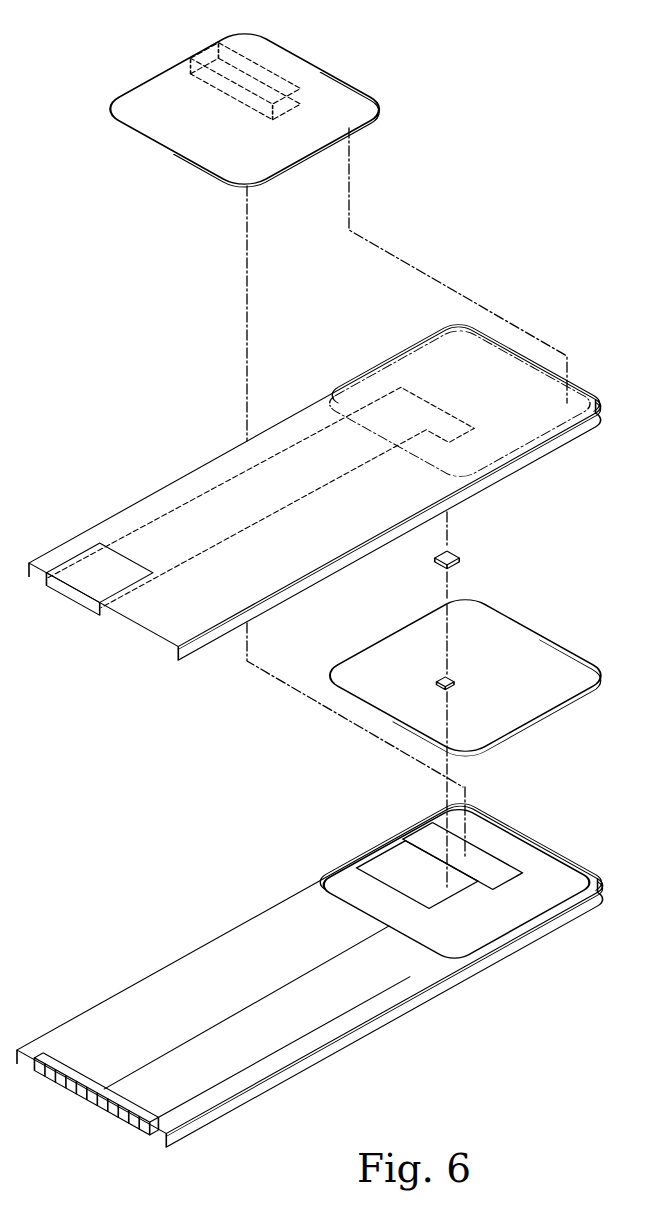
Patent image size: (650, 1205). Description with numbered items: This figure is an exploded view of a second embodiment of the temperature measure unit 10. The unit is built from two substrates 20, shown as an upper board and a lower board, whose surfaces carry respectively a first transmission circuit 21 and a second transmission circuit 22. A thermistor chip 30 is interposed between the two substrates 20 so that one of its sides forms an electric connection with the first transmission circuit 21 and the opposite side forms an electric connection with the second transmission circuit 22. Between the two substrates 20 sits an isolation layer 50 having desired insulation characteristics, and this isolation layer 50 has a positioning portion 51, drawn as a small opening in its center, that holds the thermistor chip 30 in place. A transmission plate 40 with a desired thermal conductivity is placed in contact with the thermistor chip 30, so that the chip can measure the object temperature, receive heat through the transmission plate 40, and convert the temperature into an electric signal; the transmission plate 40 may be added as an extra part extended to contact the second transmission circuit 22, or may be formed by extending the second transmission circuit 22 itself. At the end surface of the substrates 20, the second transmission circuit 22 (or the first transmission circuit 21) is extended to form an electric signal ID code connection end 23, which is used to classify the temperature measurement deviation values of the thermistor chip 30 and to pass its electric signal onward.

The temperature measure unit 10 is at (523, 97).
The substrate 20 is at (215, 466).
The first transmission circuit 21 is at (137, 533).
The second transmission circuit 22 is at (265, 1032).
The electric signal ID code connection end 23 is at (100, 1104).
The thermistor chip 30 is at (453, 560).
The transmission plate 40 is at (298, 74).
The isolation layer 50 is at (513, 633).
The positioning portion 51 is at (453, 681).